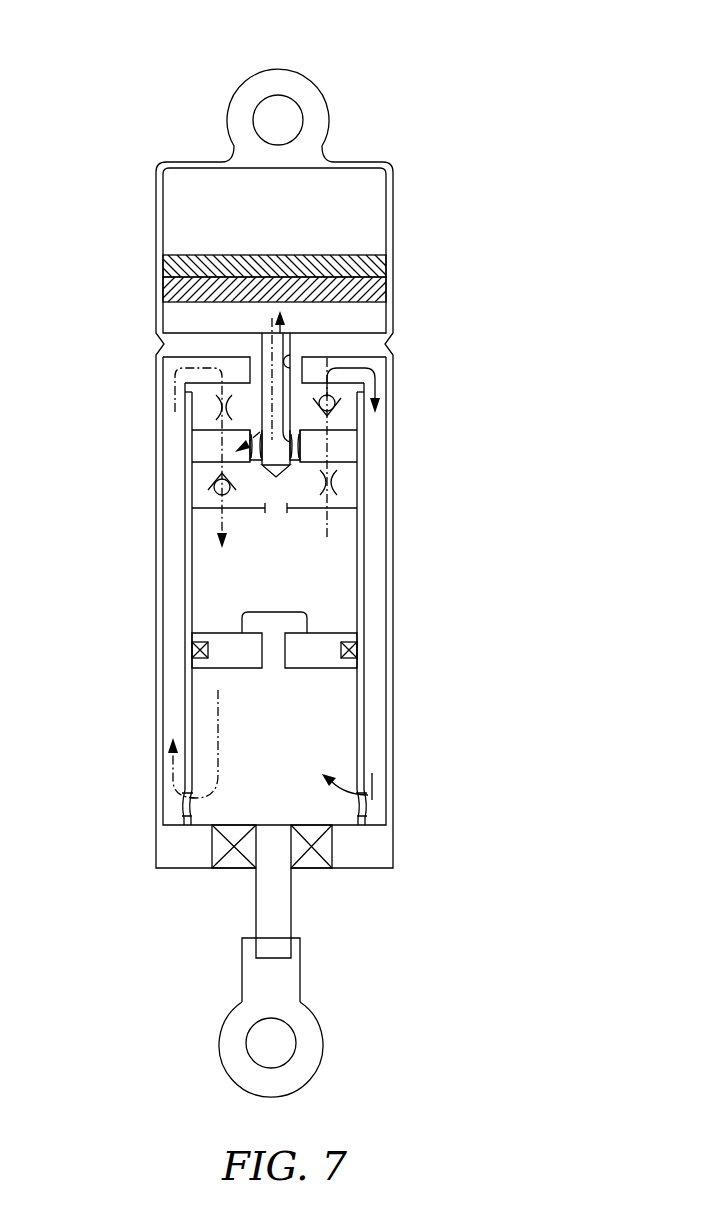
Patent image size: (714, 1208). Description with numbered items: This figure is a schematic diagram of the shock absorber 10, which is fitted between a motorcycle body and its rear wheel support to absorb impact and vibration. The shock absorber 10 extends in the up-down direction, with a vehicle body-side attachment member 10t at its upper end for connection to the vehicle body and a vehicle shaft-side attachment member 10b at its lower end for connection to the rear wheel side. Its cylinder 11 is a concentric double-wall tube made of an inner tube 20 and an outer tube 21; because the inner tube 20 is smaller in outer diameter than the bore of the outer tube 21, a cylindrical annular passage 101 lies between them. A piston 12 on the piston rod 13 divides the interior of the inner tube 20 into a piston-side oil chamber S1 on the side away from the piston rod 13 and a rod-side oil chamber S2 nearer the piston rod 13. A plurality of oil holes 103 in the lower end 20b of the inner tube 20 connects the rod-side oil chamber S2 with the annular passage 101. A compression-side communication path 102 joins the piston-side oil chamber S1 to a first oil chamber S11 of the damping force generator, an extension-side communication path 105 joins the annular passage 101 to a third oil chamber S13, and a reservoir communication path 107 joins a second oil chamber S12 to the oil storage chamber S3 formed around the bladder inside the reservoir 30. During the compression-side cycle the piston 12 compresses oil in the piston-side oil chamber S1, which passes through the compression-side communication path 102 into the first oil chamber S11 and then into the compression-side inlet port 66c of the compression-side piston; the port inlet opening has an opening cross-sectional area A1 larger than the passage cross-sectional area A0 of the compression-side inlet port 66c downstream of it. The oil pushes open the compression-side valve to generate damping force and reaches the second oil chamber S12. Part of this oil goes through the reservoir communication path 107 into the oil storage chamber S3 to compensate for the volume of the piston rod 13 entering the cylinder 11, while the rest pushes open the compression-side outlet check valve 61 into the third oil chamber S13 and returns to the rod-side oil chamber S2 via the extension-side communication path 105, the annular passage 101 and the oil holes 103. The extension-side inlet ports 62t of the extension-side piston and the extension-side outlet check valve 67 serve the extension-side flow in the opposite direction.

The shock absorber 10 is at (454, 97).
The vehicle body-side attachment member 10t is at (305, 88).
The vehicle shaft-side attachment member 10b is at (310, 1035).
The cylinder 11 is at (487, 535).
The piston 12 is at (337, 632).
The piston rod 13 is at (293, 900).
The inner tube 20 is at (360, 565).
The lower end of the inner tube 20b is at (367, 820).
The outer tube 21 is at (393, 583).
The reservoir 30 is at (395, 302).
The compression-side outlet check valve 61 is at (340, 413).
The extension-side inlet port 62t is at (214, 418).
The compression-side inlet port 66c is at (340, 483).
The extension-side outlet check valve 67 is at (210, 487).
The annular passage 101 is at (377, 665).
The compression-side communication path 102 is at (266, 512).
The oil holes 103 is at (372, 792).
The extension-side communication path 105 is at (372, 375).
The reservoir communication path 107 is at (292, 361).
The passage cross-sectional area of the compression-side inlet port A0 is at (292, 443).
The opening cross-sectional area of the port inlet opening A1 is at (332, 493).
The piston-side oil chamber S1 is at (342, 545).
The rod-side oil chamber S2 is at (337, 722).
The oil storage chamber S3 is at (180, 325).
The first oil chamber S11 is at (200, 505).
The second oil chamber S12 is at (205, 445).
The third oil chamber S13 is at (205, 405).